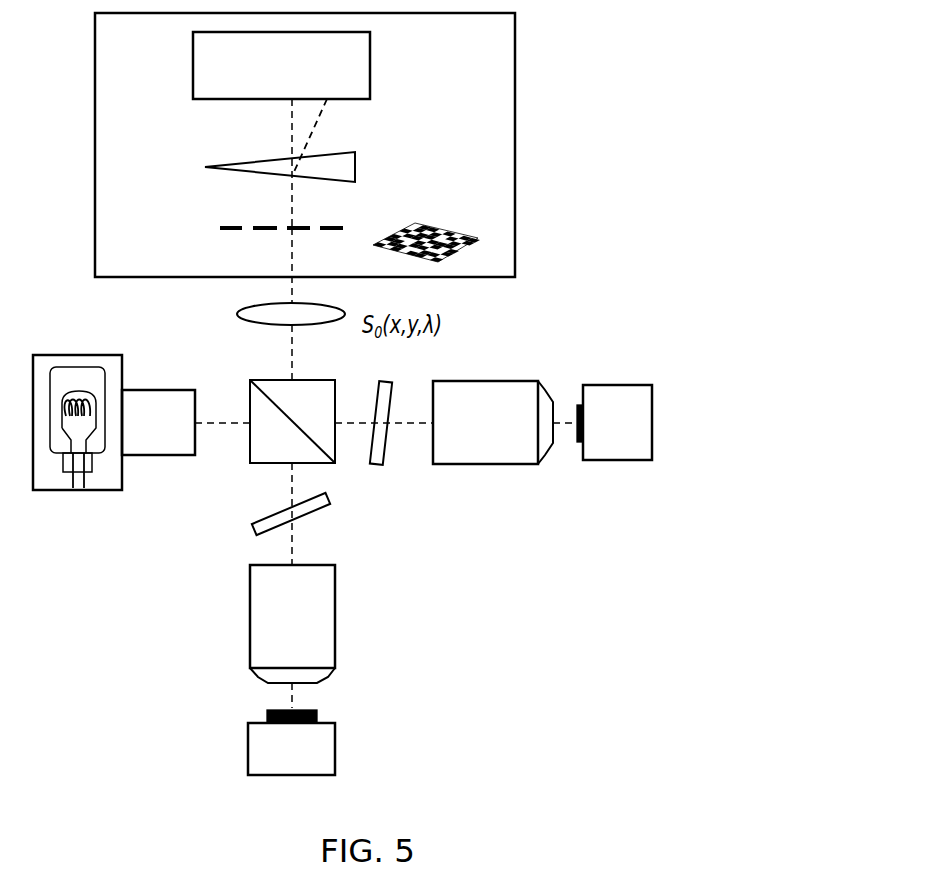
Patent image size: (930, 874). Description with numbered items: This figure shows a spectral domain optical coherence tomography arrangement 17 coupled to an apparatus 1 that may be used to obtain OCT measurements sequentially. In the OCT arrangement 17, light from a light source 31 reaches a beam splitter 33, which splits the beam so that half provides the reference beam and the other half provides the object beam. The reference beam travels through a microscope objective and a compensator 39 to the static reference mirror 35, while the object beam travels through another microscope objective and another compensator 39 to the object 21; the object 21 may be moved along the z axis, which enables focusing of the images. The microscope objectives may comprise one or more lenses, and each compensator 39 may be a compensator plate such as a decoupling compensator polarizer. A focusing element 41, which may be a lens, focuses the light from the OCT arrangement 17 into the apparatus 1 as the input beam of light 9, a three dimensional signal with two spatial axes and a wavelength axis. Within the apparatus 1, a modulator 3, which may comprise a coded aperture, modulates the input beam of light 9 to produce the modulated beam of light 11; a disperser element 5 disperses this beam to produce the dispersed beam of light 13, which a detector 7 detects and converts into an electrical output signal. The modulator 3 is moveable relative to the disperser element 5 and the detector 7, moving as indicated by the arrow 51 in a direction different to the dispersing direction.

The apparatus 1 is at (535, 96).
The modulator 3 is at (343, 228).
The disperser element 5 is at (355, 167).
The detector 7 is at (193, 73).
The input beam of light 9 is at (292, 262).
The modulated beam of light 11 is at (292, 212).
The dispersed beam of light 13 is at (321, 113).
The optical coherence tomography arrangement 17 is at (641, 356).
The object 21 is at (257, 707).
The light source 31 is at (84, 490).
The beam splitter 33 is at (250, 466).
The static reference mirror 35 is at (573, 460).
The compensator 39 is at (387, 450).
The focusing element 41 is at (318, 324).
The arrow 51 is at (463, 260).